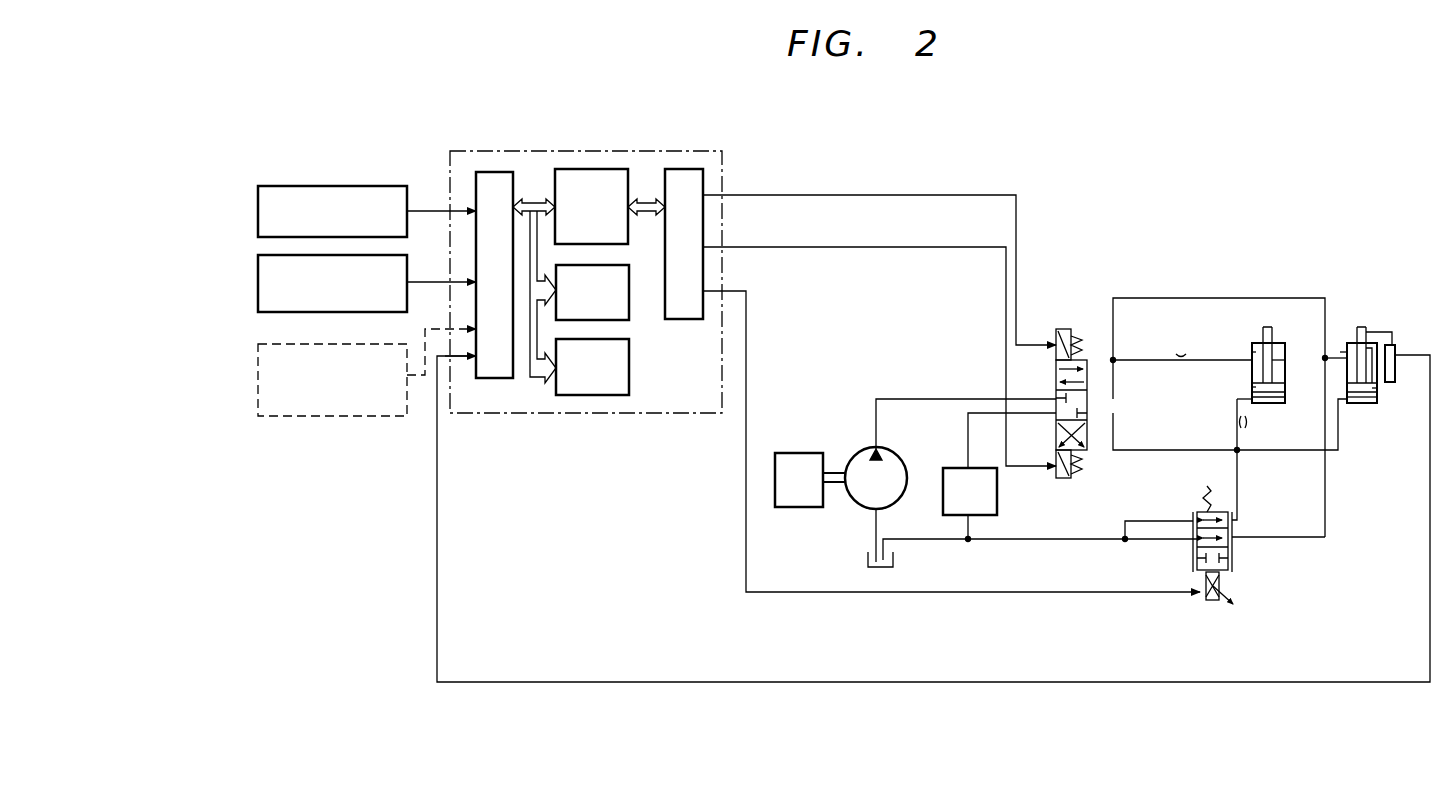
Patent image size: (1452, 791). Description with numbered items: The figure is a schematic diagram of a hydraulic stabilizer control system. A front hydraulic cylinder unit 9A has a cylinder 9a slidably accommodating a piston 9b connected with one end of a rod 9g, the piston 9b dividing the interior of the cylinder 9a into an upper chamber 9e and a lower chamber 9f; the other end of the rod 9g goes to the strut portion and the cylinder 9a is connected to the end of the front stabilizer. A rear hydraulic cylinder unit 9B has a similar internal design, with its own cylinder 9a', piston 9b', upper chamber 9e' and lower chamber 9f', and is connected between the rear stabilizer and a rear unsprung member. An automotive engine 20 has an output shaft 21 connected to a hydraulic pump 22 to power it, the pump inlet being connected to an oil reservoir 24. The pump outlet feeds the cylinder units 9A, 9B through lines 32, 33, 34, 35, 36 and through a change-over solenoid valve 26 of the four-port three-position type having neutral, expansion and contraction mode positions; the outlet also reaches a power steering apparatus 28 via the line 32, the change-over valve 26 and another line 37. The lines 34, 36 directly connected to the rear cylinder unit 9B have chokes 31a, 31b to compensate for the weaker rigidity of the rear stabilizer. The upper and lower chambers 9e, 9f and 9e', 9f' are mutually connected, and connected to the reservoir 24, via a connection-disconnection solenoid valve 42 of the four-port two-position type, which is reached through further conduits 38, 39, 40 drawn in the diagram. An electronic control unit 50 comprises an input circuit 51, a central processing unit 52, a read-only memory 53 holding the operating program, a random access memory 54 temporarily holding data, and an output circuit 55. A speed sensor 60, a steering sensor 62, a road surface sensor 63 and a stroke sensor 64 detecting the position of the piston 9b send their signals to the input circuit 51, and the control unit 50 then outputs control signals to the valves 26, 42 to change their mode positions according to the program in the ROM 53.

The front hydraulic cylinder unit 9A is at (1346, 340).
The rear hydraulic cylinder unit 9B is at (1247, 340).
The cylinder 9a is at (1315, 326).
The cylinder 9a' is at (1225, 342).
The piston 9b is at (1395, 400).
The piston 9b' is at (1228, 376).
The upper chamber 9e is at (1384, 331).
The upper chamber 9e' is at (1298, 350).
The lower chamber 9f is at (1365, 422).
The lower chamber 9f' is at (1284, 416).
The rod 9g is at (1361, 327).
The automotive engine 20 is at (802, 453).
The output shaft 21 is at (837, 472).
The hydraulic pump 22 is at (855, 500).
The oil reservoir 24 is at (895, 559).
The change-over solenoid valve 26 is at (1087, 372).
The power steering apparatus 28 is at (997, 497).
The choke 31a is at (1181, 364).
The choke 31b is at (1237, 422).
The line 32 is at (919, 399).
The line 33 is at (1205, 298).
The line 34 is at (1140, 360).
The line 35 is at (1290, 450).
The line 36 is at (1235, 436).
The line 37 is at (968, 441).
The conduit 38 is at (1237, 508).
The conduit 39 is at (1325, 503).
The return conduit 40 is at (1040, 542).
The connection-disconnection solenoid valve 42 is at (1232, 554).
The electronic control unit 50 is at (577, 151).
The input circuit 51 is at (497, 172).
The central processing unit 52 is at (615, 169).
The read-only memory 53 is at (629, 298).
The random access memory 54 is at (629, 380).
The output circuit 55 is at (697, 169).
The speed sensor 60 is at (393, 186).
The steering sensor 62 is at (393, 255).
The road surface sensor 63 is at (375, 416).
The stroke sensor 64 is at (1397, 348).